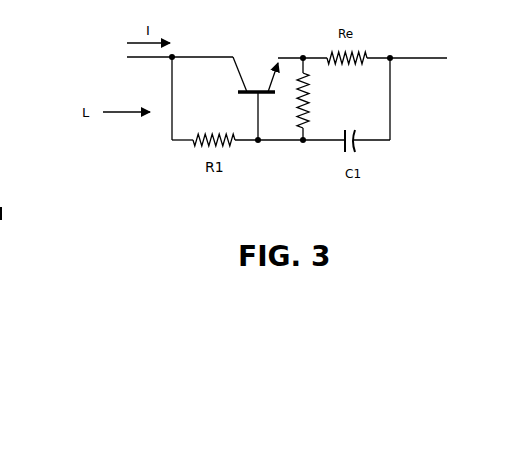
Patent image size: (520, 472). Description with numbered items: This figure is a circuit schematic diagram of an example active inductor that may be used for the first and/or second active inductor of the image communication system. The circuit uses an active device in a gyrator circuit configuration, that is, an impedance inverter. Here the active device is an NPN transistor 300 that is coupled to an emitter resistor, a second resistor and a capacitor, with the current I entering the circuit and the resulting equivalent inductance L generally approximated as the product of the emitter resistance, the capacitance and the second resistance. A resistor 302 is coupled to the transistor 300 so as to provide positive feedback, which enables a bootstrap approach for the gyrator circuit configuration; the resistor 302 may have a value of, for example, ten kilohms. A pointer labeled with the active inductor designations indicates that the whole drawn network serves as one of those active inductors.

The NPN transistor 300 is at (255, 81).
The resistor 302 is at (324, 99).